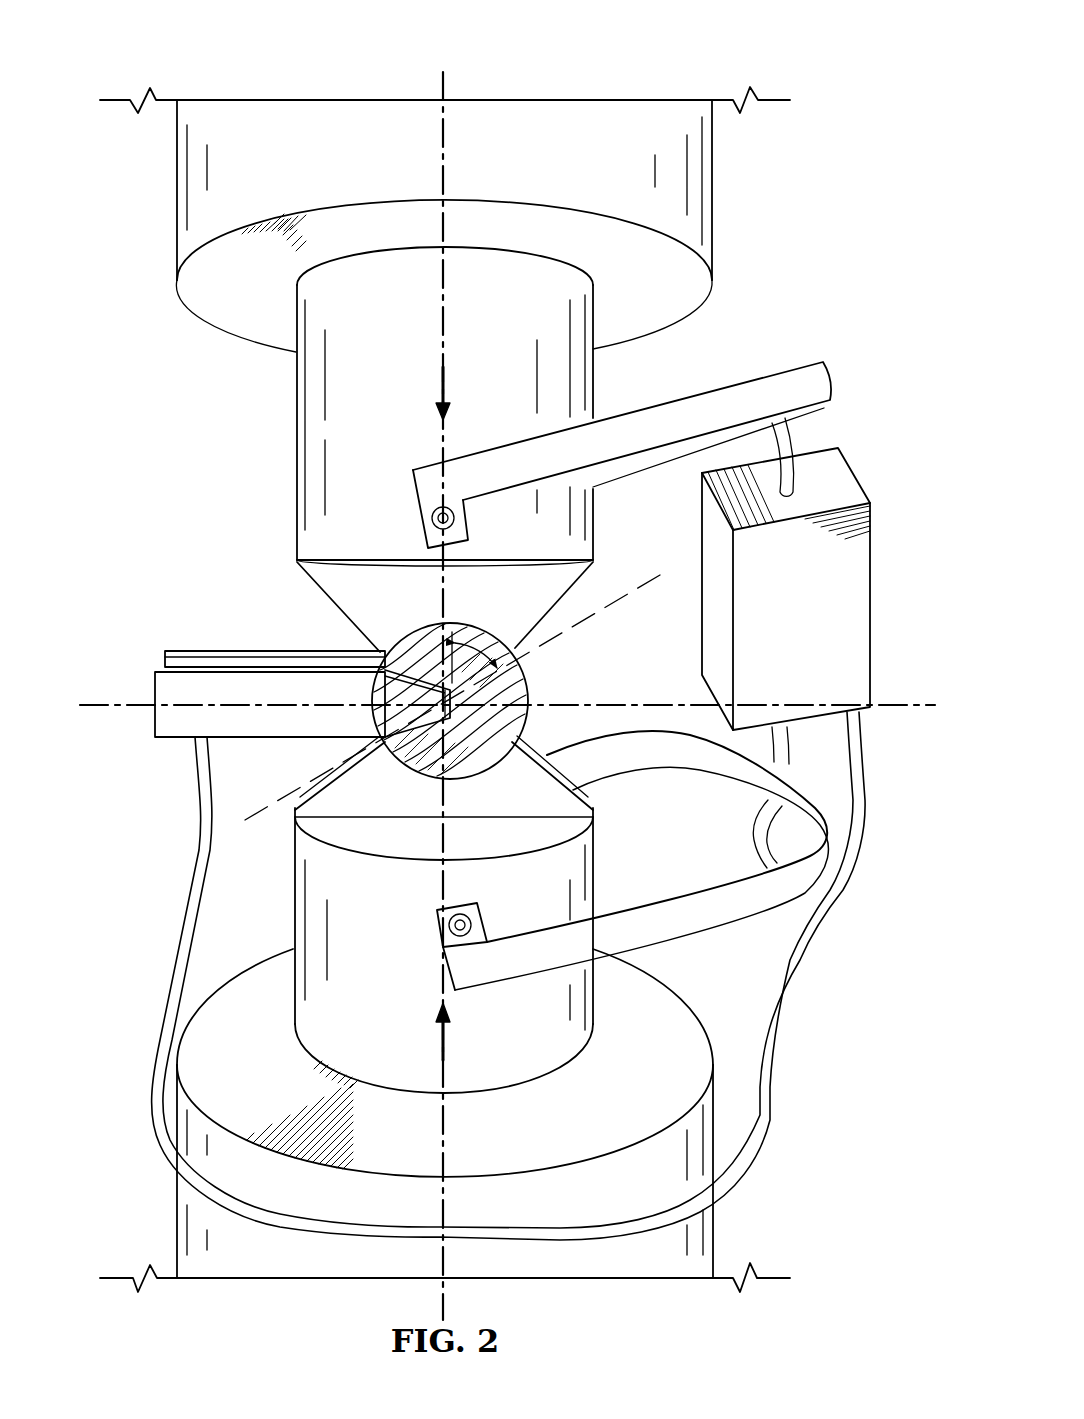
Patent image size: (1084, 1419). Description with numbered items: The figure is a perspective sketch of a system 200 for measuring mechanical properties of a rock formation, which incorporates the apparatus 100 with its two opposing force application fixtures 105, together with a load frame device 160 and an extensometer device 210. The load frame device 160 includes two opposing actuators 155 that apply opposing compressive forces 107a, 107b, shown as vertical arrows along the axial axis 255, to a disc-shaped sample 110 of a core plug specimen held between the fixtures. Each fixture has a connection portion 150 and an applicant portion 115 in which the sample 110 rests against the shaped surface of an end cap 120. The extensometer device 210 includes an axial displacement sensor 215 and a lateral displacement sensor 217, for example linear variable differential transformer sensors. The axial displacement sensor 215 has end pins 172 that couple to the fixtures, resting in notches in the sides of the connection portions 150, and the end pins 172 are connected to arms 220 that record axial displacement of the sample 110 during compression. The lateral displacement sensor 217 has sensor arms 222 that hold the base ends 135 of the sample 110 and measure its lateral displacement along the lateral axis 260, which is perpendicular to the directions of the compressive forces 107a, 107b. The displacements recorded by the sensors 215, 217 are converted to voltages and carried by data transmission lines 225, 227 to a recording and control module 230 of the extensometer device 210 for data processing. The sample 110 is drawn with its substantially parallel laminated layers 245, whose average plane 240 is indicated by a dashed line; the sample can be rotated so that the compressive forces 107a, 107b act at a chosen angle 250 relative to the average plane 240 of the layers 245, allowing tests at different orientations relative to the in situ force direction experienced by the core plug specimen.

The apparatus 100 is at (128, 330).
The force application fixture 105 is at (225, 390).
The compressive force 107a is at (443, 395).
The compressive force 107b is at (443, 1043).
The disc-shaped sample 110 is at (415, 626).
The applicant portion 115 is at (300, 570).
The end cap 120 is at (376, 655).
The base end 135 is at (390, 748).
The connection portion 150 is at (297, 422).
The actuator 155 is at (177, 190).
The load frame device 160 is at (165, 58).
The end pin 172 is at (432, 517).
The system 200 is at (878, 32).
The extensometer device 210 is at (880, 400).
The axial displacement sensor 215 is at (840, 352).
The lateral displacement sensor 217 is at (140, 683).
The arm 220 is at (735, 386).
The sensor arm 222 is at (185, 652).
The data transmission line 225 is at (795, 440).
The data transmission line 227 is at (145, 1105).
The recording and control module 230 is at (872, 610).
The average plane 240 is at (622, 598).
The laminated layers 245 is at (523, 686).
The angle 250 is at (458, 638).
The axial axis 255 is at (443, 82).
The lateral axis 260 is at (105, 710).